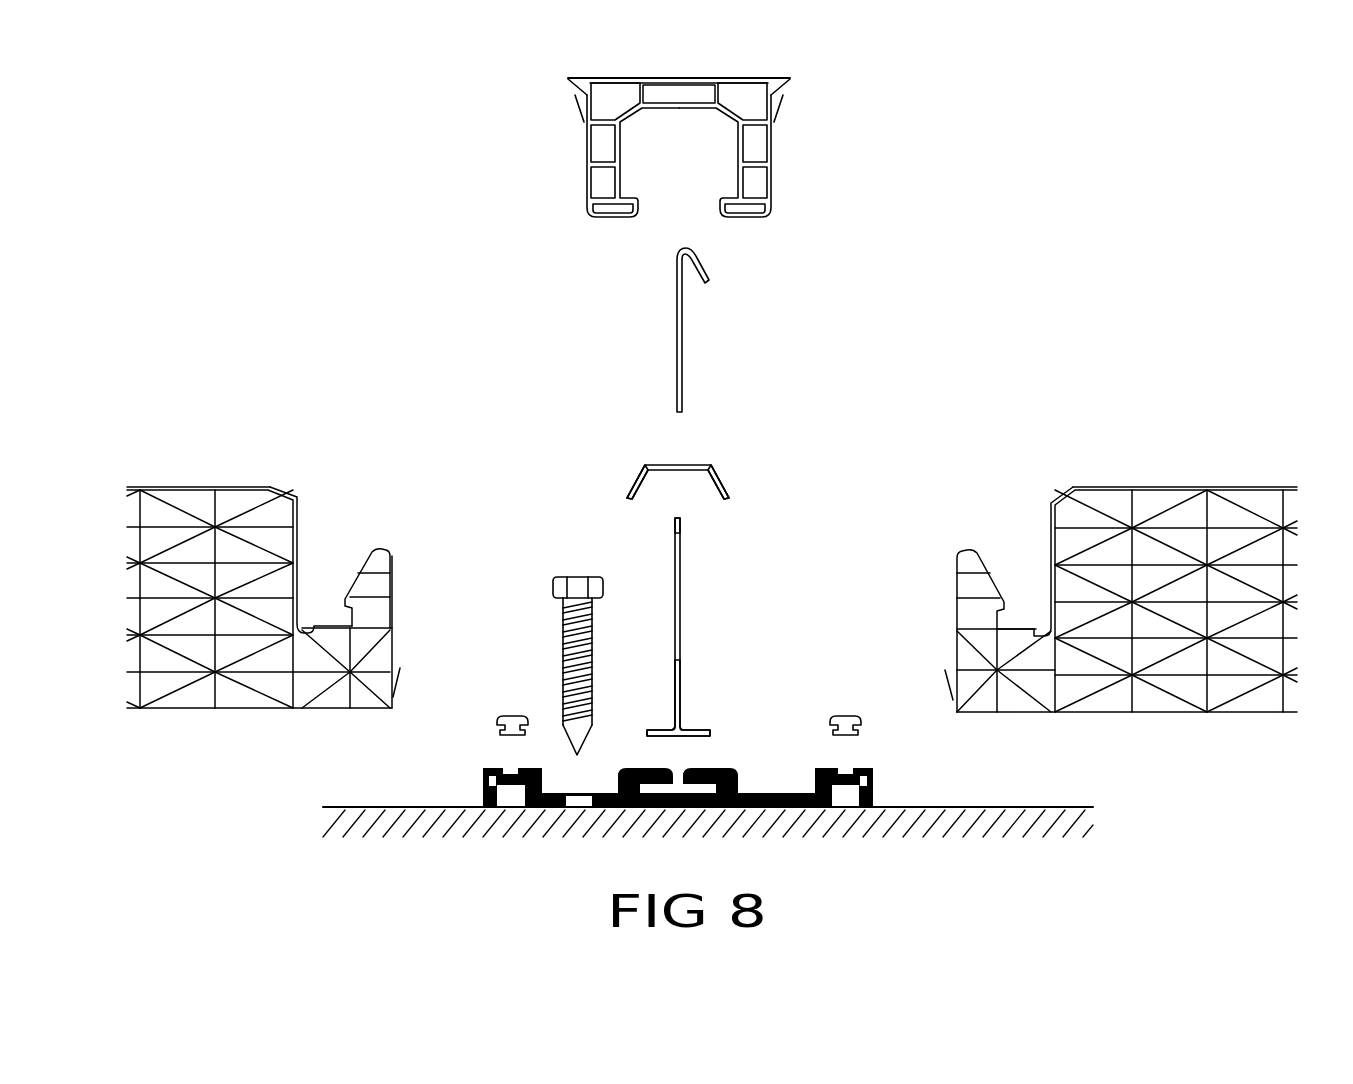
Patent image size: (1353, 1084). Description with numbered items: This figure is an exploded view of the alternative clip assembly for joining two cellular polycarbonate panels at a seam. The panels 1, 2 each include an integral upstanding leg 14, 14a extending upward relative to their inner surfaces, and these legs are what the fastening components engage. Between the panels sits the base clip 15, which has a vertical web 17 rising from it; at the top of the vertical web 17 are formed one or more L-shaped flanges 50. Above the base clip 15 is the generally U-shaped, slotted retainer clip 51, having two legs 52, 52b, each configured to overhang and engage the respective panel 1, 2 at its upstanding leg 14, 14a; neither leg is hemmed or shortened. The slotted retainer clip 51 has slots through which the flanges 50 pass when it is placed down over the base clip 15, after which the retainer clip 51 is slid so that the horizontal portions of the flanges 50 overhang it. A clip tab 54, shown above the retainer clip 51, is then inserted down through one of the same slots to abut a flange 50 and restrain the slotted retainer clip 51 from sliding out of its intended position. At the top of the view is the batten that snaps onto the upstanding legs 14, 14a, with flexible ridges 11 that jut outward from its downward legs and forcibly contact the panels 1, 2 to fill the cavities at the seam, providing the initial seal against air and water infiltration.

The flexible ridges 11 is at (580, 107).
The clip tab 54 is at (675, 350).
The slotted retainer clip 51 is at (700, 466).
The leg of slotted retainer clip 52 is at (630, 488).
The leg of slotted retainer clip 52b is at (727, 490).
The L-shaped flange 50 is at (680, 533).
The vertical web 17 is at (680, 615).
The base clip 15 is at (678, 678).
The panel 1 is at (287, 579).
The upstanding leg 14 is at (378, 612).
The panel 2 is at (1081, 581).
The upstanding leg 14a is at (957, 588).